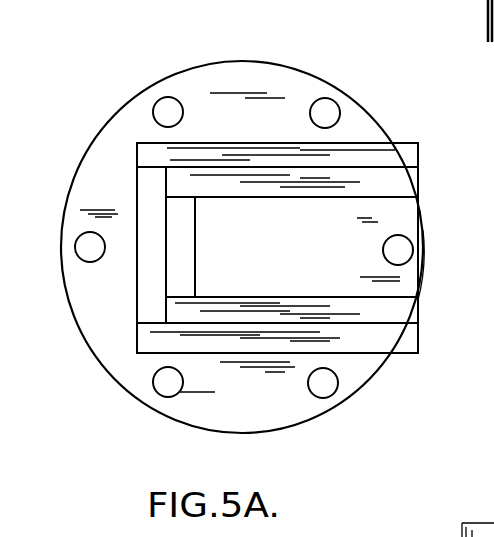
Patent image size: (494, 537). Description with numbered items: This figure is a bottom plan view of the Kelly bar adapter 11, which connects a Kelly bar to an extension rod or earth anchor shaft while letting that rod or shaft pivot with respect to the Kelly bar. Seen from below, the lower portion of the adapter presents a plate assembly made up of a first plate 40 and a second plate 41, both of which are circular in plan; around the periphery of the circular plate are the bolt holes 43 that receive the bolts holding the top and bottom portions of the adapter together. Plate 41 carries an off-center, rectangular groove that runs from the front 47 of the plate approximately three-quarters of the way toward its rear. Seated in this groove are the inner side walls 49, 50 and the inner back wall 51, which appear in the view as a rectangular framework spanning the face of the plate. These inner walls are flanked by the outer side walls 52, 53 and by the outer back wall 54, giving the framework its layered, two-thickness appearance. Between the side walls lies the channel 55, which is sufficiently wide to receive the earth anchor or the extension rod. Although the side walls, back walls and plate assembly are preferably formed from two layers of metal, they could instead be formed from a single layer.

The Kelly bar adapter 11 is at (355, 50).
The first plate 40 is at (403, 221).
The second plate 41 is at (258, 82).
The bolt holes 43 is at (158, 96).
The front 47 is at (428, 266).
The inner side wall 49 is at (405, 322).
The inner side wall 50 is at (409, 196).
The inner back wall 51 is at (186, 244).
The outer side wall 52 is at (405, 354).
The outer side wall 53 is at (412, 162).
The outer back wall 54 is at (148, 200).
The channel 55 is at (263, 297).